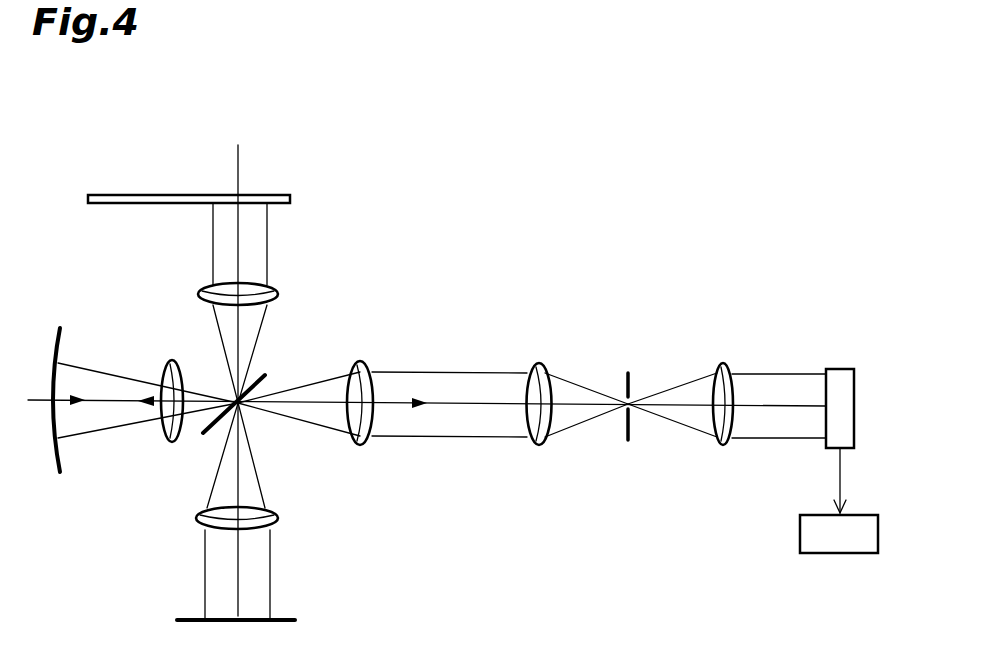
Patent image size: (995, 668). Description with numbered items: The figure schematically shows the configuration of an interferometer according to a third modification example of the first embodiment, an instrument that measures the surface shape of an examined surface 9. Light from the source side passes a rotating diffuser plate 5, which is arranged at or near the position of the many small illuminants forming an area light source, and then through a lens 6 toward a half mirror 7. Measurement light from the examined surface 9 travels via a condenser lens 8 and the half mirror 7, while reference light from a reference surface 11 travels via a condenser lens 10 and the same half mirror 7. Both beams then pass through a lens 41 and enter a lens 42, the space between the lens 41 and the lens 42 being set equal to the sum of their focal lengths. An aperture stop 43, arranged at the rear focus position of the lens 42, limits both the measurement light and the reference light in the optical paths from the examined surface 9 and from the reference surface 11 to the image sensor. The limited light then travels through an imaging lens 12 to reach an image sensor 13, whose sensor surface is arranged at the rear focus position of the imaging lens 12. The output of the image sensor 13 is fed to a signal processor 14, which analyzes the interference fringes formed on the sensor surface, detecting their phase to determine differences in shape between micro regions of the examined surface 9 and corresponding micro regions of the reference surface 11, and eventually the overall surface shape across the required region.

The rotating diffuser plate 5 is at (262, 195).
The lens 6 is at (277, 287).
The half mirror 7 is at (214, 405).
The condenser lens 8 is at (168, 360).
The examined surface 9 is at (60, 363).
The condenser lens 10 is at (276, 517).
The reference surface 11 is at (218, 616).
The lens 41 is at (355, 361).
The lens 42 is at (531, 363).
The aperture stop 43 is at (624, 375).
The imaging lens 12 is at (722, 364).
The image sensor 13 is at (840, 376).
The signal processor 14 is at (826, 546).